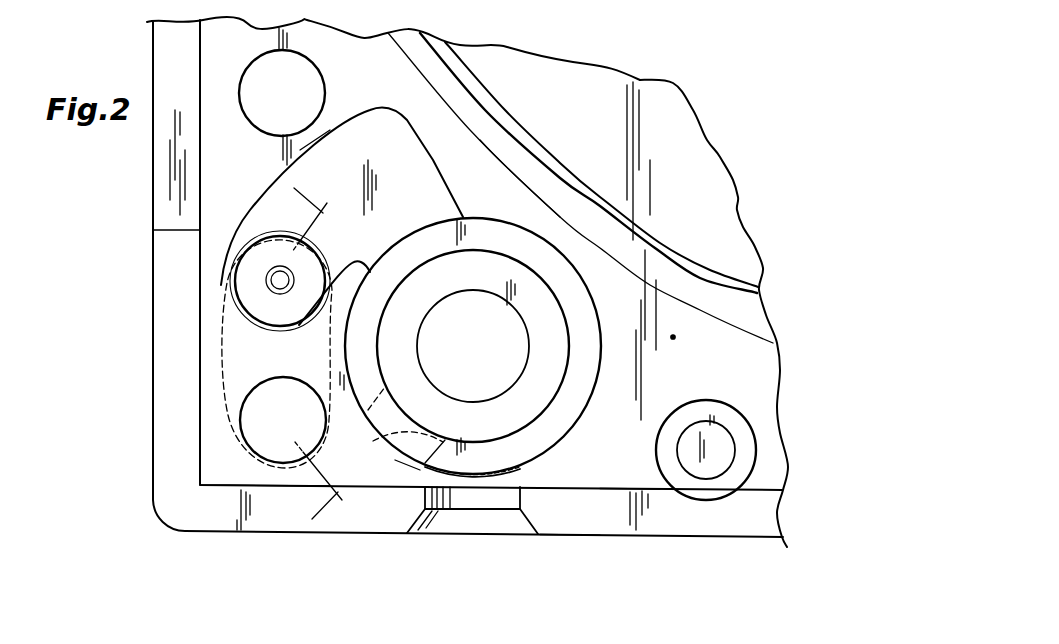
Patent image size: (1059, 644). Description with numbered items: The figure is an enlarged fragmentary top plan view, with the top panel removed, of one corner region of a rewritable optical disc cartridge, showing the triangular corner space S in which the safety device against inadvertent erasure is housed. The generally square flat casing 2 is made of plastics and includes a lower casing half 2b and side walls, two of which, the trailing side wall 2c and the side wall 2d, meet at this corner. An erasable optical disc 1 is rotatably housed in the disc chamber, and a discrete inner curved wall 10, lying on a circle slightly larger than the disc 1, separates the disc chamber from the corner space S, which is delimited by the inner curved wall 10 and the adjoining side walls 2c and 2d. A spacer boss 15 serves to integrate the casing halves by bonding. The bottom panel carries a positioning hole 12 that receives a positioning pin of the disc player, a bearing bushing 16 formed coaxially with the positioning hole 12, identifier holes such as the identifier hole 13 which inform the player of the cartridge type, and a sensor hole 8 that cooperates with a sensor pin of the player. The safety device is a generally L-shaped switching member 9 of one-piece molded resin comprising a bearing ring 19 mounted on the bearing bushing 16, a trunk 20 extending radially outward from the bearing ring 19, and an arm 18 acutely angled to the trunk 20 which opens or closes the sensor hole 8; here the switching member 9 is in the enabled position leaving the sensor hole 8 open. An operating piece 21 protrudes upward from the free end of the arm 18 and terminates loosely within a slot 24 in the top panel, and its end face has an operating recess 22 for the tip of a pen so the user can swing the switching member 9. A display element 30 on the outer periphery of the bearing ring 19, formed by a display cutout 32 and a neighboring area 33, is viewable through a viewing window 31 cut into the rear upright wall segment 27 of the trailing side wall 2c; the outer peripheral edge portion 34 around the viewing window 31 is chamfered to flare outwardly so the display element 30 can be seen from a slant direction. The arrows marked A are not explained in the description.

The erasable optical disc 1 is at (650, 97).
The casing 2 is at (681, 543).
The lower casing half 2b is at (563, 537).
The trailing side wall 2c is at (617, 515).
The side wall 2d is at (173, 248).
The sensor hole 8 is at (256, 400).
The switching member 9 is at (462, 163).
The inner curved wall 10 is at (553, 187).
The positioning hole 12 is at (515, 333).
The identifier hole 13 is at (264, 68).
The spacer boss 15 is at (710, 407).
The bearing bushing 16 is at (553, 382).
The arm 18 is at (273, 177).
The bearing ring 19 is at (517, 233).
The trunk 20 is at (400, 128).
The operating piece 21 is at (255, 255).
The operating recess 22 is at (285, 289).
The slot 24 is at (222, 343).
The rear upright wall segment 27 is at (262, 512).
The display element 30 is at (406, 468).
The viewing window 31 is at (472, 500).
The display cutout 32 is at (391, 428).
The area 33 is at (503, 467).
The outer peripheral edge portion 34 is at (425, 520).
The direction of view A is at (327, 354).
The triangular corner space S is at (673, 337).